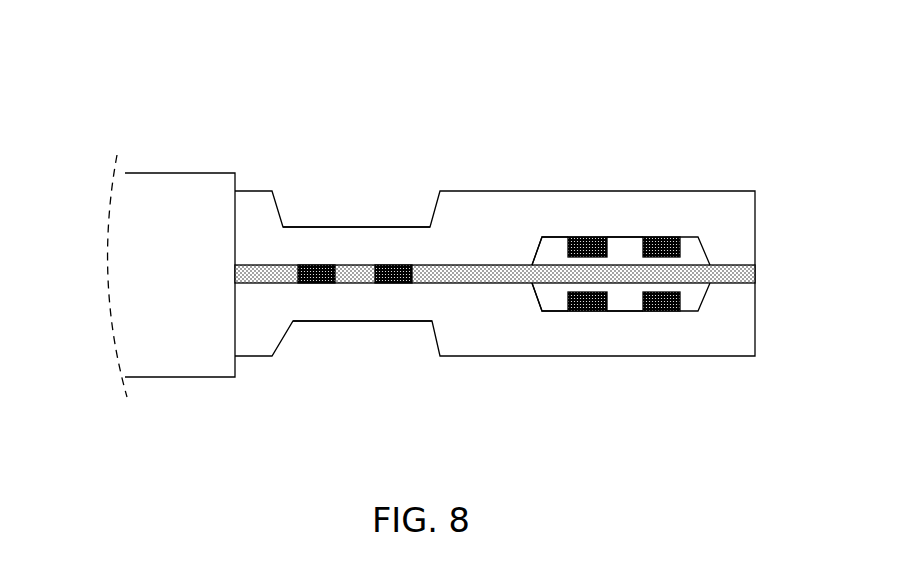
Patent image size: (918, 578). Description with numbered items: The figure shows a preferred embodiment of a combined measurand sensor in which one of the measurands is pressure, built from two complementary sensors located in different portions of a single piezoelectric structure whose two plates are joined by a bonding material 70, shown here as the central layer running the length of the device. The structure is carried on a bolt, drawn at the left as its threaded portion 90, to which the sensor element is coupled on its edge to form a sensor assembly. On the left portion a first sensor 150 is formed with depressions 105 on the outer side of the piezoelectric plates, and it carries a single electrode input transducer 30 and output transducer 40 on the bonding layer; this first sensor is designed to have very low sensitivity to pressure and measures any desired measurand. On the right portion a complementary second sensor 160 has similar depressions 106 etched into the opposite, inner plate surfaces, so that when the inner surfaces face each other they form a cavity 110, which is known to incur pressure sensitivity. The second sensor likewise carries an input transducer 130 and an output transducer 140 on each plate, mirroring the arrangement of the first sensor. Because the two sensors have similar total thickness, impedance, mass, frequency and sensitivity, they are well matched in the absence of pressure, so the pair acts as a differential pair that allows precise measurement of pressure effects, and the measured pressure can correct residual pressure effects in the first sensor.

The input transducer 30 is at (318, 283).
The output transducer 40 is at (392, 283).
The bonding material 70 is at (737, 272).
The threaded portion 90 is at (207, 173).
The depressions 105 is at (335, 223).
The depressions 106 is at (550, 237).
The cavity 110 is at (627, 260).
The input transducer 130 is at (590, 252).
The output transducer 140 is at (670, 240).
The first sensor 150 is at (320, 203).
The second sensor 160 is at (607, 178).